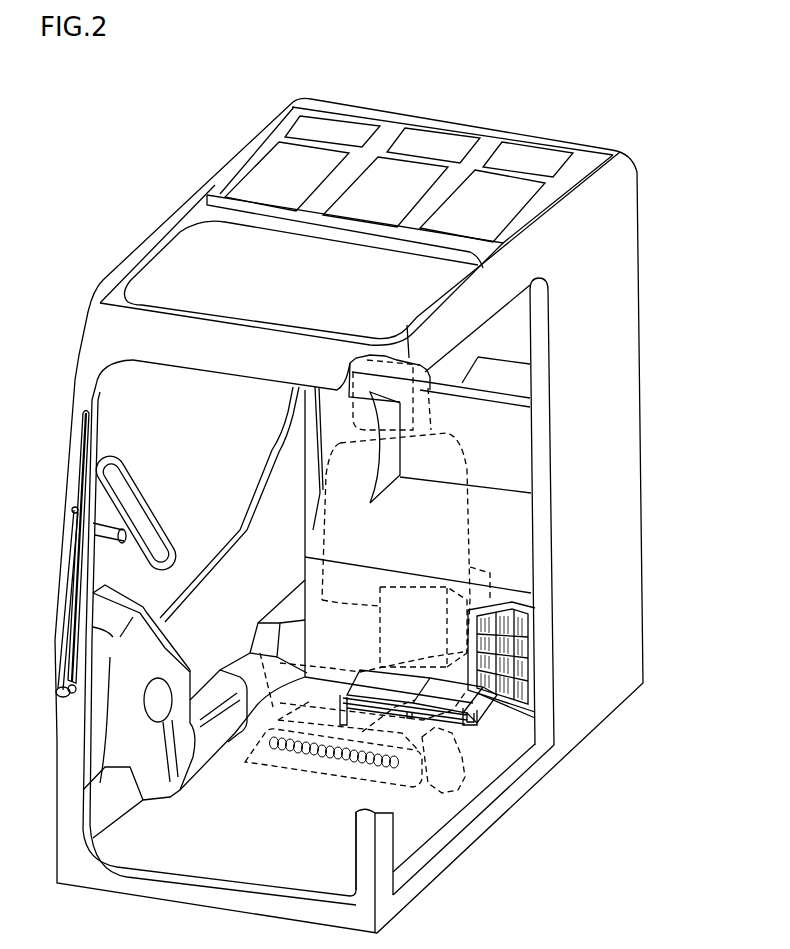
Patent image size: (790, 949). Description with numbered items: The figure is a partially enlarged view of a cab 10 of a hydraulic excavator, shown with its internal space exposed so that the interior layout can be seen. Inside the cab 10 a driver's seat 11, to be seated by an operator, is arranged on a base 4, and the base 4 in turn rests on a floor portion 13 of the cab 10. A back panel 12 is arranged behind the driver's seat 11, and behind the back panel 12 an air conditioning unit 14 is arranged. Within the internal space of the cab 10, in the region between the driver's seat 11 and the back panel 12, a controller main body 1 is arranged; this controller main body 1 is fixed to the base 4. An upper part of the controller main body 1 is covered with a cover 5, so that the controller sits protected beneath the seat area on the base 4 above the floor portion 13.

The cab 10 is at (476, 102).
The driver's seat 11 is at (470, 463).
The back panel 12 is at (517, 560).
The floor portion 13 is at (407, 835).
The air conditioning unit 14 is at (470, 567).
The controller main body 1 is at (443, 720).
The base 4 is at (440, 760).
The cover 5 is at (462, 695).